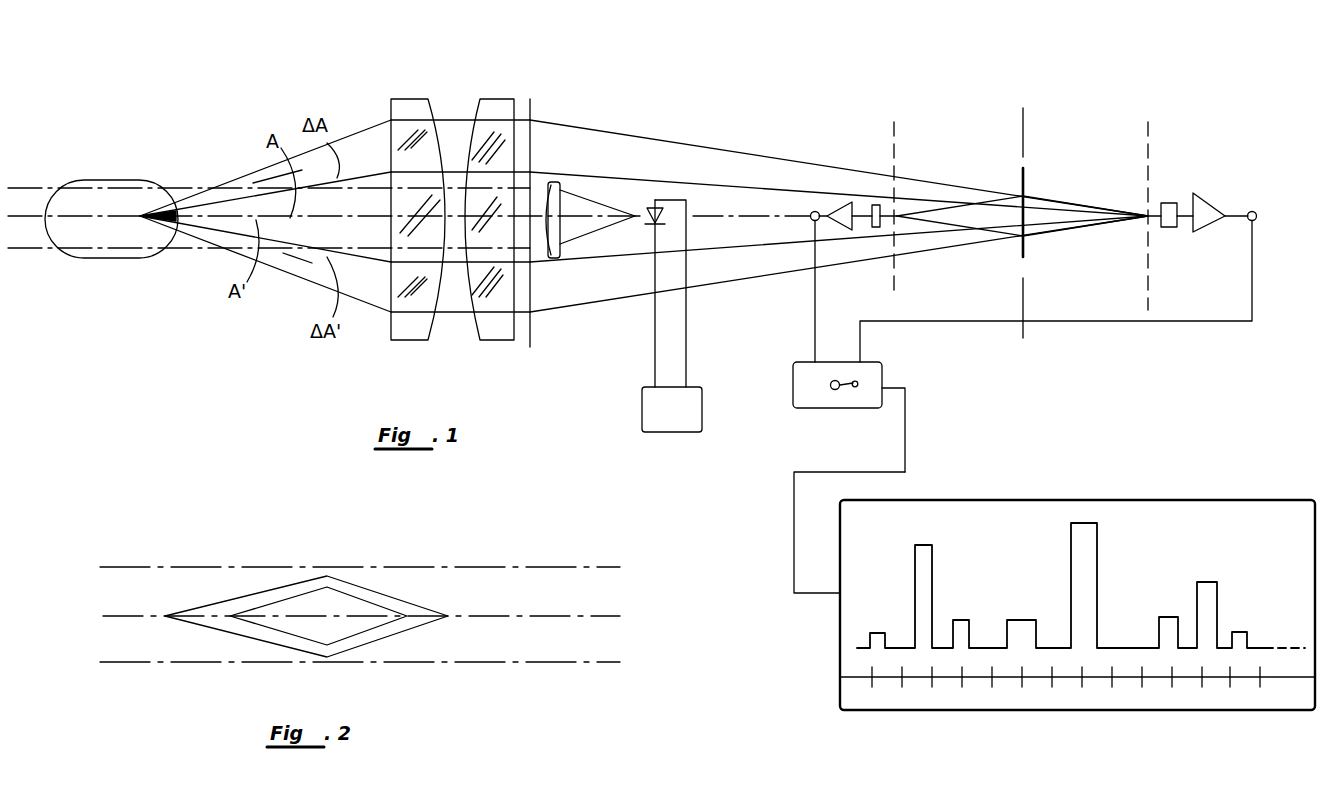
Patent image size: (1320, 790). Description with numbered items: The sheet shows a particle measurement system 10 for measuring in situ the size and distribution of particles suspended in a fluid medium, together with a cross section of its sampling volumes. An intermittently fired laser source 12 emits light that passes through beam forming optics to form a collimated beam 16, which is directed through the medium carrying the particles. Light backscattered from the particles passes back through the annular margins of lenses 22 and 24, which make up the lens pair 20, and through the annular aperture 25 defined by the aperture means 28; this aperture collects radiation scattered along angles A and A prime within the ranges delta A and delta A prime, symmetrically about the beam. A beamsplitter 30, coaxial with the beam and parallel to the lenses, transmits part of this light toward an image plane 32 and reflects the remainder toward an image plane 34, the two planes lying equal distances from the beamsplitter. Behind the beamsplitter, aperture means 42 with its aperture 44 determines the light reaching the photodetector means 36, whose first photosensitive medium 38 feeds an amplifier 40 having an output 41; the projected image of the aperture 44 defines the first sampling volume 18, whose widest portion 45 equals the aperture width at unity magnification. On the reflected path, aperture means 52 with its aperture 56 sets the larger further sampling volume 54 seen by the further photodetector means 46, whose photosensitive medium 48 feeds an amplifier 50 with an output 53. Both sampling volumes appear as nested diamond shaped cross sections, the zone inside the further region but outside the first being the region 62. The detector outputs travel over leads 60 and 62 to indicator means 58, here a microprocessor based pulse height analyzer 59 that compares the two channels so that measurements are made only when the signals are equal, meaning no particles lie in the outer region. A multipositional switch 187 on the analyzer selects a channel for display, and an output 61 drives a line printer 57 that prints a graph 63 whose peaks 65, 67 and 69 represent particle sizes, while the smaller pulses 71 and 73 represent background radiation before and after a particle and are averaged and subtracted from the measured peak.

In FIG. 1, the particle measurement system 10 is at (723, 128).
In FIG. 1, the source of monochromatic electromagnetic radiation 12 is at (640, 412).
In FIG. 1, the collimated beam 16 is at (37, 232).
In FIG. 2, the collimated beam 16 is at (523, 592).
In FIG. 2, the sampling volume 18 is at (341, 605).
In FIG. 1, the lens pair 20 is at (460, 185).
In FIG. 1, the lens 22 is at (410, 99).
In FIG. 1, the lens 24 is at (498, 99).
In FIG. 1, the annular aperture 25 is at (533, 145).
In FIG. 1, the aperture means 28 is at (531, 110).
In FIG. 1, the beamsplitter 30 is at (1026, 173).
In FIG. 1, the image plane 32 is at (1150, 168).
In FIG. 1, the image plane 34 is at (897, 132).
In FIG. 1, the photodetector means 36 is at (1180, 199).
In FIG. 1, the first photosensitive medium 38 is at (1156, 223).
In FIG. 1, the amplifier 40 is at (1216, 210).
In FIG. 1, the output 41 is at (1236, 220).
In FIG. 1, the aperture means 42 is at (1144, 221).
In FIG. 1, the aperture 44 is at (1144, 208).
In FIG. 2, the widest portion of the sampling volume 45 is at (329, 587).
In FIG. 1, the further photodetector means 46 is at (873, 202).
In FIG. 1, the photosensitive medium 48 is at (884, 221).
In FIG. 1, the amplifier 50 is at (845, 207).
In FIG. 1, the aperture means 52 is at (897, 218).
In FIG. 1, the output 53 is at (811, 214).
In FIG. 2, the further sampling volume 54 is at (291, 581).
In FIG. 1, the aperture 56 is at (897, 212).
In FIG. 1, the line printer 57 is at (1129, 500).
In FIG. 1, the indicator means 58 is at (786, 454).
In FIG. 1, the pulse height analyzer 59 is at (797, 384).
In FIG. 1, the lead 60 is at (945, 321).
In FIG. 1, the output 61 is at (897, 384).
In FIG. 1, the lead 62 is at (815, 313).
In FIG. 2, the lead 62 is at (400, 605).
In FIG. 1, the graph 63 is at (1244, 548).
In FIG. 1, the peak 65 is at (932, 547).
In FIG. 1, the peak 67 is at (1100, 525).
In FIG. 1, the peak 69 is at (1206, 582).
In FIG. 1, the background pulse 71 is at (877, 632).
In FIG. 1, the background pulse 73 is at (960, 620).
In FIG. 1, the multipositional switch 187 is at (845, 390).